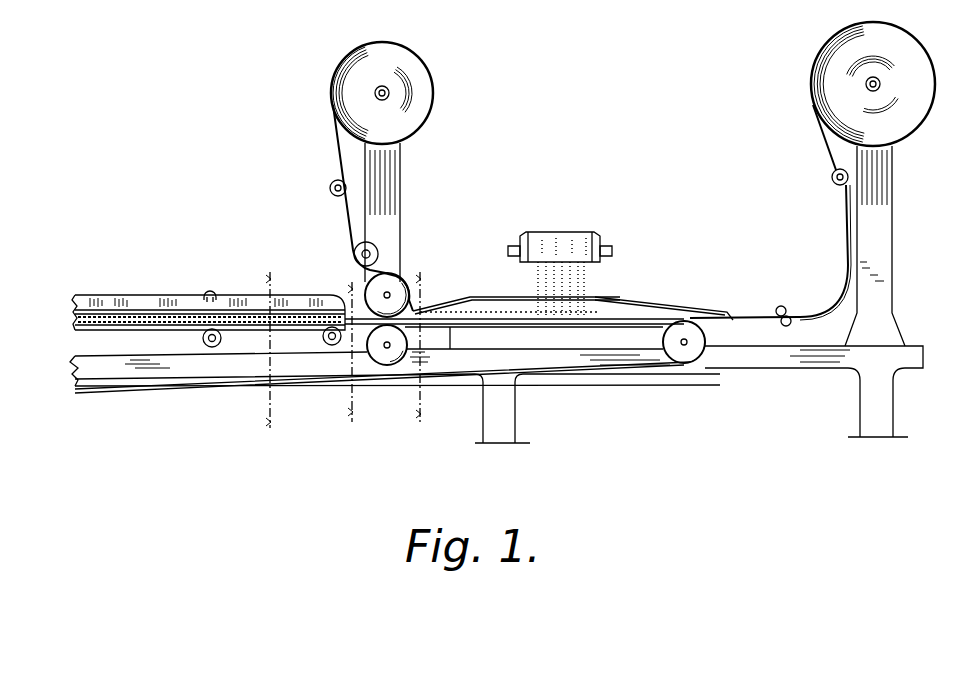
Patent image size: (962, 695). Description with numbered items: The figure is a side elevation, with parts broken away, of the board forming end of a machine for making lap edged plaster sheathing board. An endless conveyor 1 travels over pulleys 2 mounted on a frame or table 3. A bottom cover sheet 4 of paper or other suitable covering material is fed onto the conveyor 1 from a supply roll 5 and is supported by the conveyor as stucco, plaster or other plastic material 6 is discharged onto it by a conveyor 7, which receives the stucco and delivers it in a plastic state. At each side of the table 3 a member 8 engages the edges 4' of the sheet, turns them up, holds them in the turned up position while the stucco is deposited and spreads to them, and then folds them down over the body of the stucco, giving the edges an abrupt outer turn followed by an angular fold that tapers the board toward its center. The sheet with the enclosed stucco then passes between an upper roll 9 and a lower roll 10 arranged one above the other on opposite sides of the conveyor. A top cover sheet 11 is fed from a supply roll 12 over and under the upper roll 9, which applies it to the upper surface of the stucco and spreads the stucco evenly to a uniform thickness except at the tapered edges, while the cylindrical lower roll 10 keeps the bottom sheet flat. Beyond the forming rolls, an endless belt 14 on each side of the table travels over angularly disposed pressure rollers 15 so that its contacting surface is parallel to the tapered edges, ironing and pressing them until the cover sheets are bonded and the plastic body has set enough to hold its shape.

The endless conveyor 1 is at (584, 323).
The pulleys 2 is at (202, 339).
The frame or table 3 is at (868, 384).
The sheet 4 is at (556, 276).
The edges of the sheet 4' is at (548, 285).
The supply roll 5 is at (810, 98).
The plastic material 6 is at (584, 283).
The conveyor 7 is at (601, 240).
The member 8 is at (712, 284).
The upper roll 9 is at (408, 291).
The lower roll 10 is at (394, 353).
The sheet 11 is at (345, 212).
The supply roll 12 is at (418, 121).
The endless belt 14 is at (128, 296).
The pressure rollers 15 is at (216, 295).